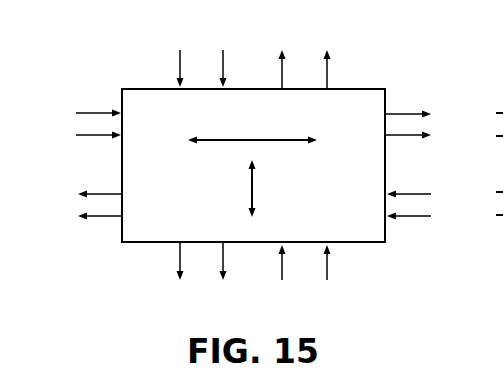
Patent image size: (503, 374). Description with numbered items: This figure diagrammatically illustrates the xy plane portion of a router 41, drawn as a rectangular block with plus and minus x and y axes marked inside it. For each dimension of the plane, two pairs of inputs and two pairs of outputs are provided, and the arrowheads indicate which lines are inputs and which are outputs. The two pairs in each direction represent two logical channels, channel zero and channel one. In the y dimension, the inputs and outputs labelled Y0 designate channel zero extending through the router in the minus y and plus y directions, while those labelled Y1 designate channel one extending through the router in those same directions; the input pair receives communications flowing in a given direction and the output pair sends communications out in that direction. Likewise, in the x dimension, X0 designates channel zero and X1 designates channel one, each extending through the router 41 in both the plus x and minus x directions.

The router 41 is at (390, 71).
The channel 0 in the x dimension X0 is at (266, 151).
The channel 1 in the x dimension X1 is at (266, 173).
The channel 0 in the y dimension Y0 is at (224, 166).
The channel 1 in the y dimension Y1 is at (278, 166).